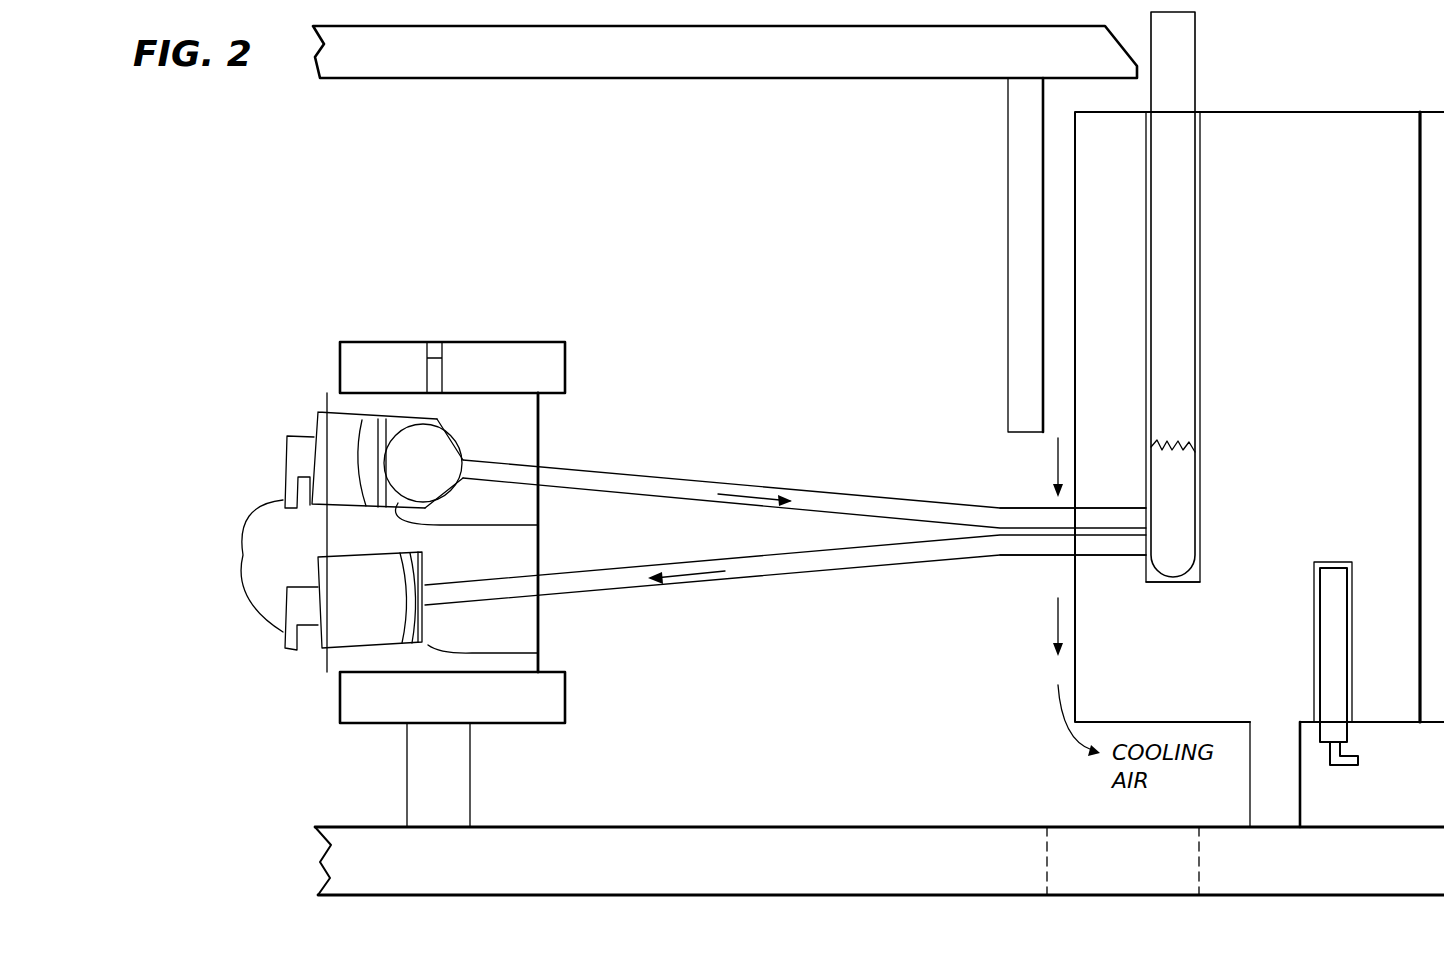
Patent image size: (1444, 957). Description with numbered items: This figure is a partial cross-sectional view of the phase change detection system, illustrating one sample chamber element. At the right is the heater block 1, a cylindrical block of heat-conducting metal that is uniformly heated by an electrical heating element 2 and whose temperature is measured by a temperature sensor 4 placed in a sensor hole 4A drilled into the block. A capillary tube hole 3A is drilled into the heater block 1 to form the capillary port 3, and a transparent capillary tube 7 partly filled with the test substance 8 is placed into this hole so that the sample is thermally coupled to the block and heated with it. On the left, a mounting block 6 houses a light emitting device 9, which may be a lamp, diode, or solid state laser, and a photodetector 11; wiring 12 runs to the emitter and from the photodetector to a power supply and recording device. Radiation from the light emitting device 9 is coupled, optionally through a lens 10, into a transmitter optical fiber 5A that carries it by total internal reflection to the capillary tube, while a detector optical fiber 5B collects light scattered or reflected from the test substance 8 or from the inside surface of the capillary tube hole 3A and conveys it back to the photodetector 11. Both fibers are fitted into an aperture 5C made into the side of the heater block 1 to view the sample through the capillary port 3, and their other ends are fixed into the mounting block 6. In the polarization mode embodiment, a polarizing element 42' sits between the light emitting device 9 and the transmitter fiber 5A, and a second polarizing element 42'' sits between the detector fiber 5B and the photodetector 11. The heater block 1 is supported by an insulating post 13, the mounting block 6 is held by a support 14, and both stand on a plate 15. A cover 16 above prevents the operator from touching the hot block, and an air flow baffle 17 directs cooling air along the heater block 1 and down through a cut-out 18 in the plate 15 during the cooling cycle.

The heater block 1 is at (1357, 112).
The electrical heating element 2 is at (1443, 110).
The capillary tube 3 is at (1147, 222).
The capillary tube hole 3A is at (1176, 582).
The temperature sensor 4 is at (1350, 722).
The sensor hole 4A is at (1330, 562).
The transmitter optical fiber 5A is at (613, 470).
The detector optical fiber 5B is at (615, 590).
The aperture 5C is at (1103, 555).
The mounting block 6 is at (540, 408).
The transparent capillary tube 7 is at (1197, 82).
The test substance 8 is at (1181, 486).
The light emitting device 9 is at (322, 412).
The lens 10 is at (450, 440).
The photodetector 11 is at (322, 648).
The wiring 12 is at (243, 555).
The insulating post 13 is at (1300, 806).
The support 14 is at (377, 342).
The plate 15 is at (975, 827).
The cover 16 is at (851, 80).
The air flow baffle 17 is at (1008, 306).
The cut-out 18 is at (1046, 825).
The polarizing element 42' is at (493, 522).
The second polarizing element 42'' is at (512, 652).